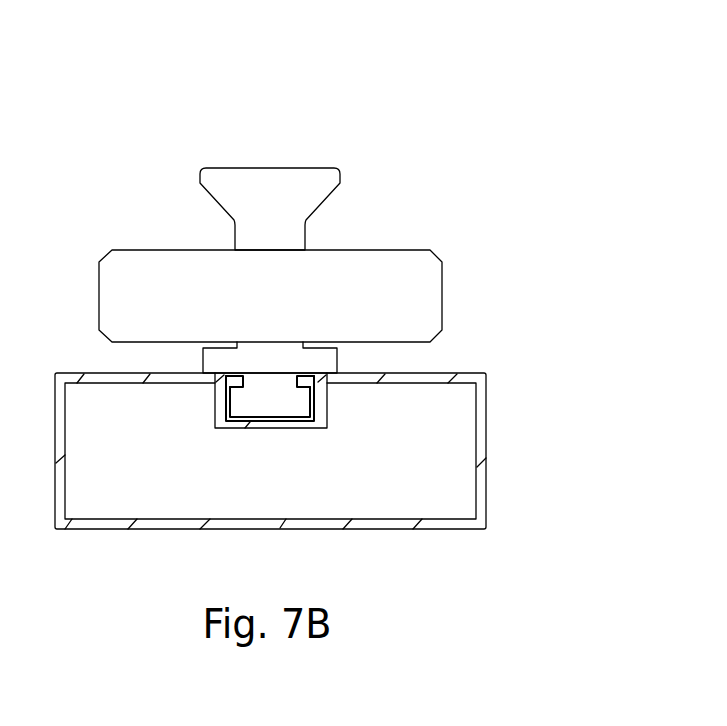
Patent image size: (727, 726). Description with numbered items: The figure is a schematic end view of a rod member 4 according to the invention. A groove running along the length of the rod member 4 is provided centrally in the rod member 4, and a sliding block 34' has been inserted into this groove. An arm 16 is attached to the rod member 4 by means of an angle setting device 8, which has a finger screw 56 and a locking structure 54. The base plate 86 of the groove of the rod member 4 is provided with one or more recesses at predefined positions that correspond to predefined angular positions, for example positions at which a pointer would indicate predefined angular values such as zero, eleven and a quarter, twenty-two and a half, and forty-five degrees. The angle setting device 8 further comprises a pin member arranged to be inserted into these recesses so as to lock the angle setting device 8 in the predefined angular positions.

The angle setting device 8 is at (166, 122).
The locking structure 54 is at (298, 168).
The finger screw 56 is at (410, 250).
The arm 16 is at (338, 363).
The rod member 4 is at (486, 437).
The base plate 86 is at (275, 425).
The retaining clip 34' is at (171, 376).